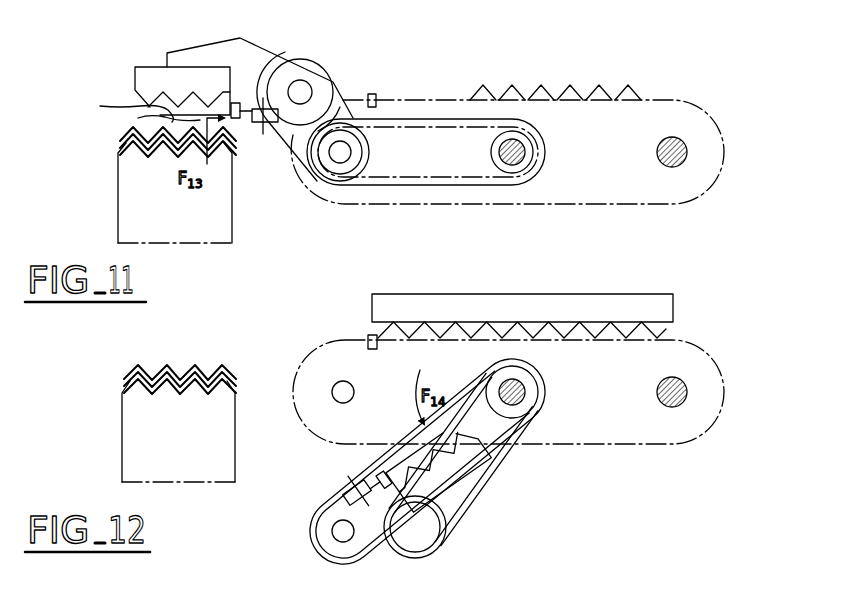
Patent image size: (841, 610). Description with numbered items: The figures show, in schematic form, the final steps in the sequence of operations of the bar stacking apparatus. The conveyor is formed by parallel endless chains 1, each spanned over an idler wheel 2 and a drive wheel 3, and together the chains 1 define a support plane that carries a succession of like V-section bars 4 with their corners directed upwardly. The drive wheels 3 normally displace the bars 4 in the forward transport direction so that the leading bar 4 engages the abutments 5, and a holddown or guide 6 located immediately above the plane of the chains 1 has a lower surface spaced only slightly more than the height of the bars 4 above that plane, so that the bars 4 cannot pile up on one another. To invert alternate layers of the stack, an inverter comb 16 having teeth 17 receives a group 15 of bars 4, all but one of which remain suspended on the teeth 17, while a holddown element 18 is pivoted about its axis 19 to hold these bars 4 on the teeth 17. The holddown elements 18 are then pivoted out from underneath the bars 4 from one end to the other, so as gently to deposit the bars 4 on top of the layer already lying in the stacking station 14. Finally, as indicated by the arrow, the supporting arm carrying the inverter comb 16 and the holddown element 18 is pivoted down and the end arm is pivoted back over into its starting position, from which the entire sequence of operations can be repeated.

In FIG. 11, the endless chain 1 is at (678, 98).
In FIG. 12, the endless chain 1 is at (706, 356).
In FIG. 12, the idler wheel 2 is at (333, 389).
In FIG. 12, the drive wheel 3 is at (676, 398).
In FIG. 11, the V-section bar 4 is at (493, 90).
In FIG. 12, the V-section bar 4 is at (542, 332).
In FIG. 11, the abutment 5 is at (372, 93).
In FIG. 12, the abutment 5 is at (367, 338).
In FIG. 12, the holddown or guide 6 is at (474, 296).
In FIG. 11, the stacking station 14 is at (118, 195).
In FIG. 11, the group of bars 15 is at (139, 104).
In FIG. 12, the group of bars 15 is at (212, 358).
In FIG. 11, the inverter comb 16 is at (136, 76).
In FIG. 12, the inverter comb 16 is at (478, 463).
In FIG. 11, the tooth of inverter comb 17 is at (172, 98).
In FIG. 12, the tooth of inverter comb 17 is at (430, 458).
In FIG. 11, the holddown element 18 is at (272, 60).
In FIG. 12, the holddown element 18 is at (365, 482).
In FIG. 11, the axis of holddown element 19 is at (264, 136).
In FIG. 12, the axis of holddown element 19 is at (340, 486).